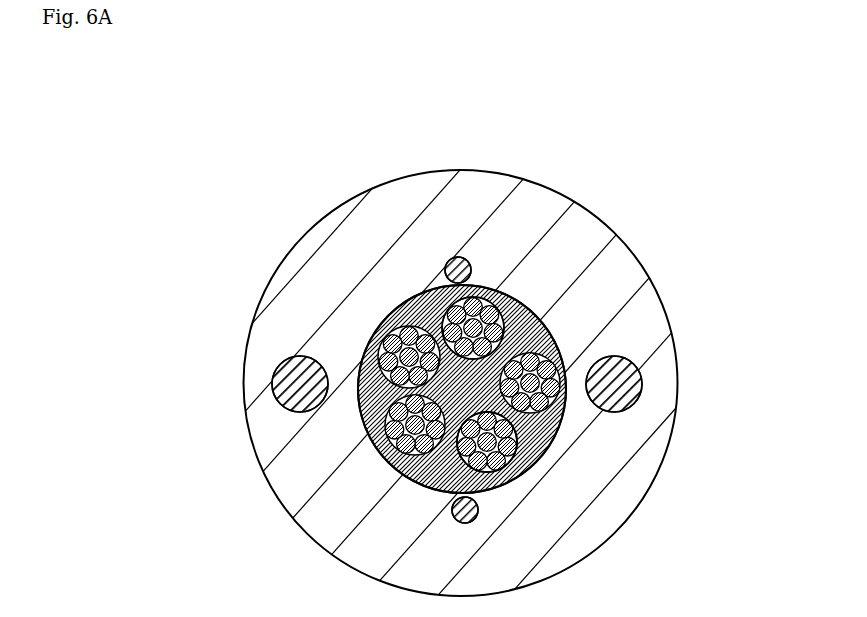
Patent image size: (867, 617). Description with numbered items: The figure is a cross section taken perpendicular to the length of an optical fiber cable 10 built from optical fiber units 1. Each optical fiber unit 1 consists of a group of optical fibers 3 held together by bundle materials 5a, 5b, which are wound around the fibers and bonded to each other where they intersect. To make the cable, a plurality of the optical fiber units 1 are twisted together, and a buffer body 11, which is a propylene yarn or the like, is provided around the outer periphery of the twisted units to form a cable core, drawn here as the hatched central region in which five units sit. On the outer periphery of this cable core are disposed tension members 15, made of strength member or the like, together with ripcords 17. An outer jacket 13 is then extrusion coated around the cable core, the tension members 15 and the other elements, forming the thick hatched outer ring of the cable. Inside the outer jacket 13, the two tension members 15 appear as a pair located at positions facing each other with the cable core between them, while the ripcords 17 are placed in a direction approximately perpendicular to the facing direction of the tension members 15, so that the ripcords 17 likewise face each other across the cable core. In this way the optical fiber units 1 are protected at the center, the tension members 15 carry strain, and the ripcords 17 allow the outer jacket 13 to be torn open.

The optical fiber unit 1 is at (516, 425).
The optical fibers 3 is at (533, 410).
The bundle material 5a is at (555, 345).
The bundle material 5b is at (508, 422).
The optical fiber cable 10 is at (615, 185).
The buffer body 11 is at (405, 474).
The outer jacket 13 is at (627, 270).
The tension members 15 is at (628, 385).
The ripcords 17 is at (450, 266).